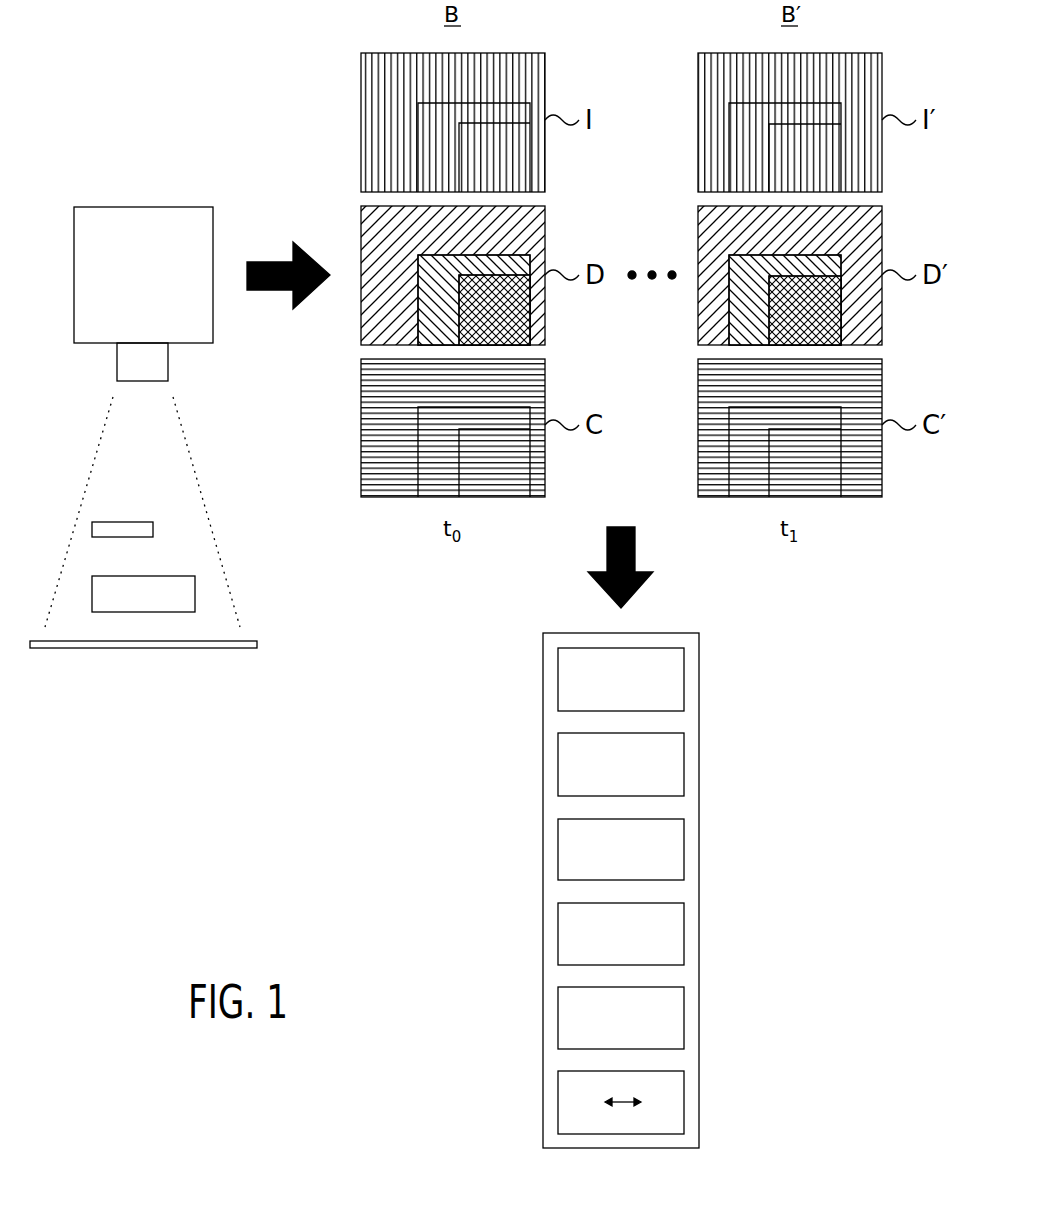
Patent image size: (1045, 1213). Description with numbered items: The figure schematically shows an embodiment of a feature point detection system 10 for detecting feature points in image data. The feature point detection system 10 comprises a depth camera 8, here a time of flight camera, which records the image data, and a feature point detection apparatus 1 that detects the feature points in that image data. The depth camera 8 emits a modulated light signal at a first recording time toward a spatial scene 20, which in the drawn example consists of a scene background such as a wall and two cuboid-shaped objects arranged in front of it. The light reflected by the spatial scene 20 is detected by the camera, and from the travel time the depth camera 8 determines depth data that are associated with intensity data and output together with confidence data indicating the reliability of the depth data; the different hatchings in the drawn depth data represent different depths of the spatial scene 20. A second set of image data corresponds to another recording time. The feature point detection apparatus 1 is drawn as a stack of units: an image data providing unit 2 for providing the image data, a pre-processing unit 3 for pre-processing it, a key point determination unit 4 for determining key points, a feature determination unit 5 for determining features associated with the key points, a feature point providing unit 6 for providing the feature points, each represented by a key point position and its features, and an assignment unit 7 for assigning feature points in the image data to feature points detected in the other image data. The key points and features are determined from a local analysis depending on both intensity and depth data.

The feature point detection system 10 is at (155, 147).
The depth camera 8 is at (213, 225).
The spatial scene 20 is at (183, 538).
The feature point detection apparatus 1 is at (543, 889).
The image data providing unit 2 is at (684, 680).
The pre-processing unit 3 is at (684, 764).
The key point determination unit 4 is at (684, 849).
The feature determination unit 5 is at (684, 932).
The feature point providing unit 6 is at (684, 1016).
The assignment unit 7 is at (684, 1099).